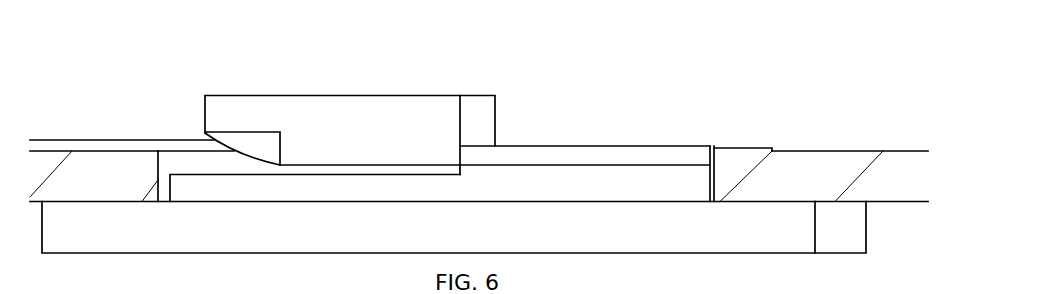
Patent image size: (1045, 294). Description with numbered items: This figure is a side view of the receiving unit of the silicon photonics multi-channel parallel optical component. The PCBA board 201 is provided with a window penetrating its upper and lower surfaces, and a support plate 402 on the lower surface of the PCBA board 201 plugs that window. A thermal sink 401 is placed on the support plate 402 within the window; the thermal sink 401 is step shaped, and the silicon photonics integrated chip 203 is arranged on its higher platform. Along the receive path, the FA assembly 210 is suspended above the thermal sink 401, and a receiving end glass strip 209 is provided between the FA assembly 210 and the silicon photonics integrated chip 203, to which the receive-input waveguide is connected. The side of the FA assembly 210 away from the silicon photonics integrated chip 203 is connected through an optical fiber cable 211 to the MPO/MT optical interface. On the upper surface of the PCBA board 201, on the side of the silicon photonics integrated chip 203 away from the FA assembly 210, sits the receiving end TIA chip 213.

The PCBA board 201 is at (819, 150).
The silicon photonics integrated chip 203 is at (565, 147).
The receiving end glass strip 209 is at (484, 87).
The FA assembly 210 is at (322, 99).
The optical fiber cable 211 is at (112, 134).
The receiving end TIA chip 213 is at (750, 136).
The thermal sink 401 is at (640, 169).
The support plate 402 is at (857, 234).